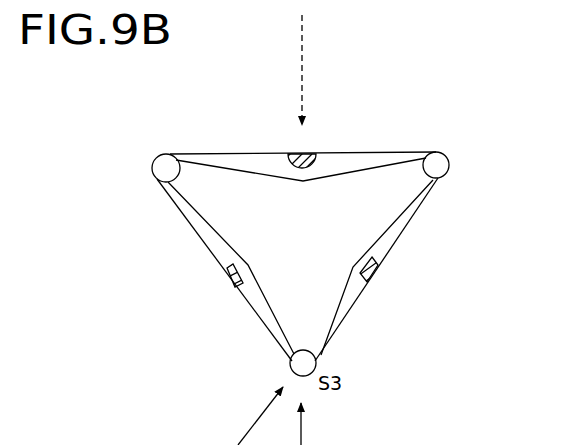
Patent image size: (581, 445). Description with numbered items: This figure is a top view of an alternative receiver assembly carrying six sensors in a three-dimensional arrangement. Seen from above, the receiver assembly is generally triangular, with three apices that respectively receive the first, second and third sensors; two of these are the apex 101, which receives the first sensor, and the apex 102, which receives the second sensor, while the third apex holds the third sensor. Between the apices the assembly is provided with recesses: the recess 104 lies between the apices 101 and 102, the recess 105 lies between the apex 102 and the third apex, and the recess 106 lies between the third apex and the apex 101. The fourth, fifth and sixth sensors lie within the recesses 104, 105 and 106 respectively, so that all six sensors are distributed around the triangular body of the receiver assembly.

The apex 101 is at (148, 157).
The apex 102 is at (455, 147).
The recess 104 is at (352, 155).
The recess 105 is at (358, 300).
The recess 106 is at (248, 303).